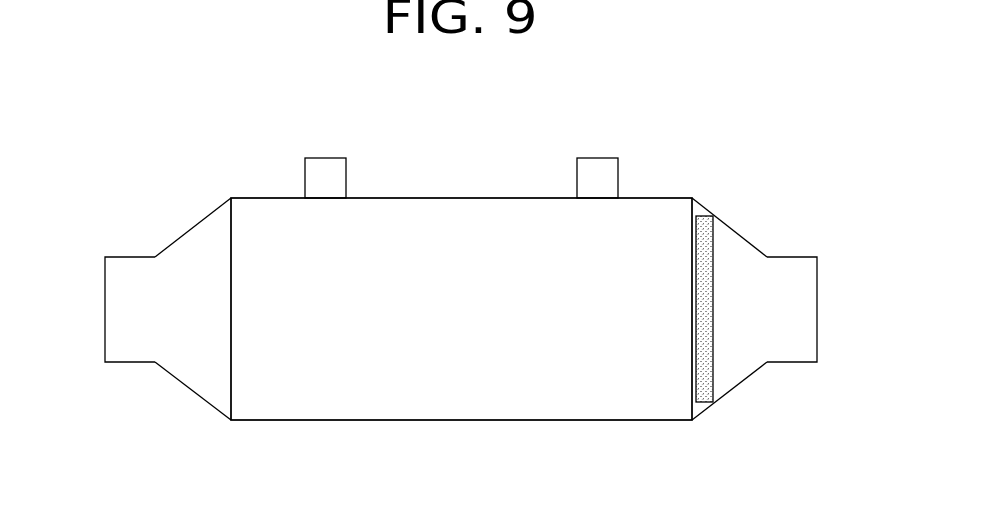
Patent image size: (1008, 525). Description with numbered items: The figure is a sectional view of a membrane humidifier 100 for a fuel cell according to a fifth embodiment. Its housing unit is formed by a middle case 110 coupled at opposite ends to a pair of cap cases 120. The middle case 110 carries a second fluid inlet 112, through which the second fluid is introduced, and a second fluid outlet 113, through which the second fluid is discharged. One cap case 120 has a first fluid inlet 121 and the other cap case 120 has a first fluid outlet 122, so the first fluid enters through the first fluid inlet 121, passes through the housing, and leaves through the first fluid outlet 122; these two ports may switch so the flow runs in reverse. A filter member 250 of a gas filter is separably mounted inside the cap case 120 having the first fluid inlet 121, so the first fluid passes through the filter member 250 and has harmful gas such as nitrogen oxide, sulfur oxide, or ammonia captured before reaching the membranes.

The membrane humidifier 100 is at (461, 162).
The middle case 110 is at (458, 395).
The second fluid inlet 112 is at (325, 172).
The second fluid outlet 113 is at (595, 172).
The cap case 120 is at (187, 242).
The first fluid inlet 121 is at (798, 328).
The first fluid outlet 122 is at (123, 328).
The filter member 250 is at (703, 227).